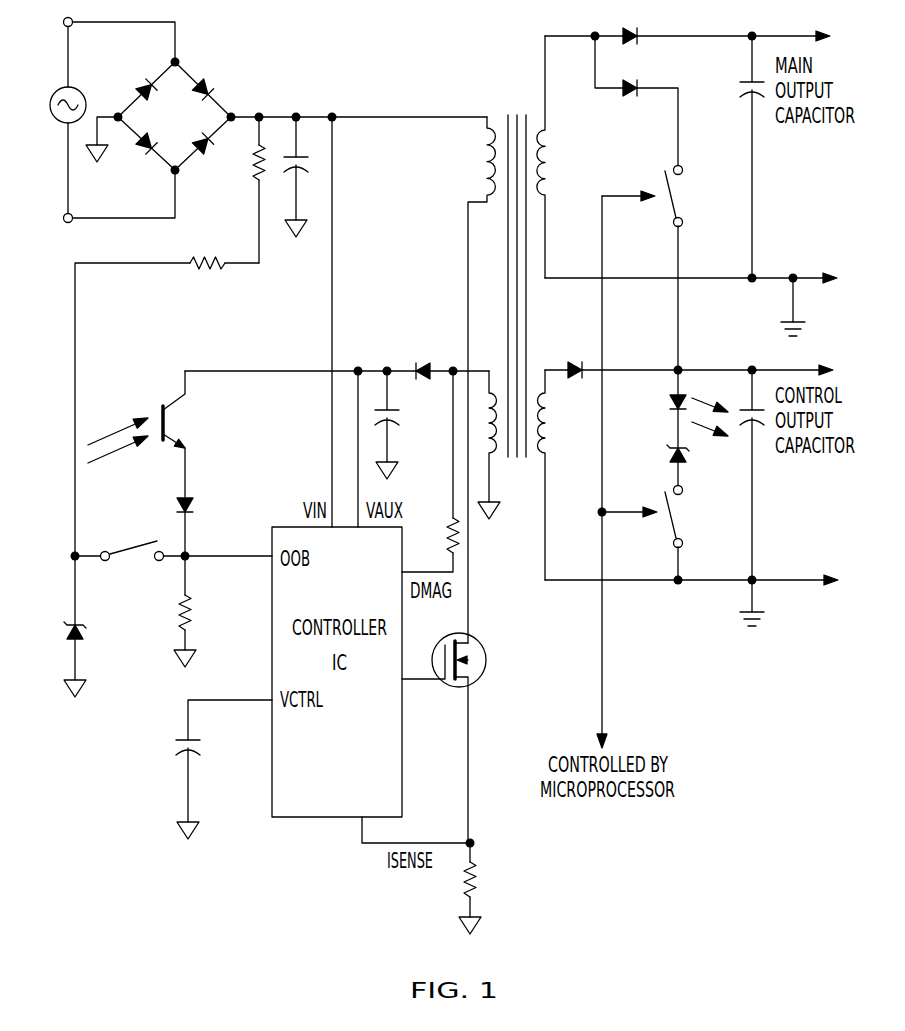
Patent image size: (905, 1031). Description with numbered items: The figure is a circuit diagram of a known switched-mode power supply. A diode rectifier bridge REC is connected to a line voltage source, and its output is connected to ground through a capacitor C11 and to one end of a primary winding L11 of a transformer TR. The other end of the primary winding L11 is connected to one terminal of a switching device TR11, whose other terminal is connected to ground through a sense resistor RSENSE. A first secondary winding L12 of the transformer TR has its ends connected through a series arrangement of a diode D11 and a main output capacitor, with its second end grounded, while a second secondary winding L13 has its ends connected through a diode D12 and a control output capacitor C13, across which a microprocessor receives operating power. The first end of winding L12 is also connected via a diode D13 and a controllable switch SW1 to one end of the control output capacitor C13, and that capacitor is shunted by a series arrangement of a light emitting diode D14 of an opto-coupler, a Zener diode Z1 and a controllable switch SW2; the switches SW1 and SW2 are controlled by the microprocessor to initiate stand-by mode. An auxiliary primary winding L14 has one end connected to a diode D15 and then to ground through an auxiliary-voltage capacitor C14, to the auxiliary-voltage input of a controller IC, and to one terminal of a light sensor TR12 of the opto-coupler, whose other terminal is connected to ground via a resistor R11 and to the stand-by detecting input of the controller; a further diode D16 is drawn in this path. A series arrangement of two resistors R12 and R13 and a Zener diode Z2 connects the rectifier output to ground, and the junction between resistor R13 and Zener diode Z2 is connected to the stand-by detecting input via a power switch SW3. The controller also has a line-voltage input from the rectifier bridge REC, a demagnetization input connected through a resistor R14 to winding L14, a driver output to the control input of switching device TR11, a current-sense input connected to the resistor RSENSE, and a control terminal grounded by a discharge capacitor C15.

The diode rectifier bridge REC is at (216, 90).
The resistor R12 is at (243, 190).
The resistor R13 is at (167, 391).
The capacitor C11 is at (310, 163).
The transformer TR is at (520, 339).
The primary winding L11 is at (487, 172).
The first secondary winding L12 is at (548, 152).
The second secondary winding L13 is at (553, 426).
The auxiliary primary winding L14 is at (490, 455).
The diode D11 is at (631, 22).
The diode D12 is at (576, 353).
The diode D13 is at (636, 103).
The light emitting diode D14 is at (683, 408).
The diode D15 is at (431, 353).
The diode D16 is at (167, 524).
The Zener diode Z1 is at (689, 452).
The Zener diode Z2 is at (87, 630).
The controllable switch SW1 is at (657, 268).
The controllable switch SW2 is at (691, 533).
The power switch SW3 is at (128, 564).
The control output capacitor C13 is at (757, 428).
The VAUX capacitor C14 is at (392, 430).
The discharge capacitor C15 is at (207, 769).
The resistor R11 is at (198, 611).
The resistor R14 is at (430, 471).
The switching device TR11 is at (484, 660).
The light sensor TR12 is at (162, 413).
The sense resistor RSENSE is at (498, 887).